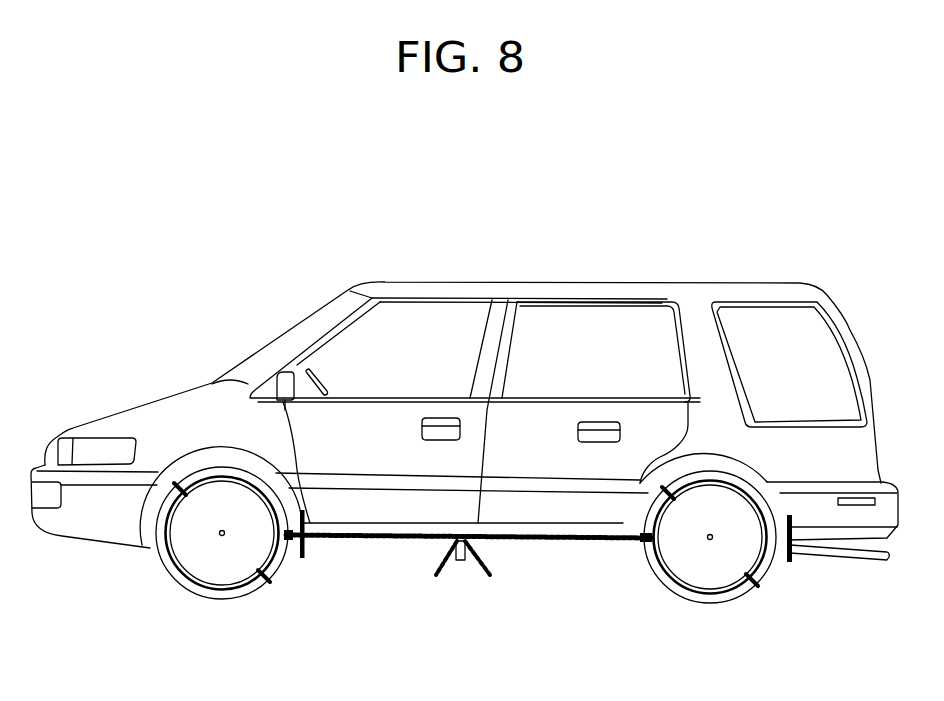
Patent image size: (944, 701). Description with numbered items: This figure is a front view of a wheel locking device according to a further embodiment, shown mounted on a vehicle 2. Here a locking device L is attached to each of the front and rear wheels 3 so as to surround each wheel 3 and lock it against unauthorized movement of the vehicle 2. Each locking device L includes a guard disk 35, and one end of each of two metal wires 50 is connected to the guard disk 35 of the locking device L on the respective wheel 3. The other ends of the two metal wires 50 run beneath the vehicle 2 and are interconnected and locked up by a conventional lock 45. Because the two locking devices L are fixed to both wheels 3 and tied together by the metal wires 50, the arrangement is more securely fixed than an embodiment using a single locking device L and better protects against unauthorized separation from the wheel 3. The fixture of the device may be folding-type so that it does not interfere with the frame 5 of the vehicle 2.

The vehicle 2 is at (467, 421).
The wheel 3 is at (176, 586).
The frame 5 is at (113, 523).
The guard disk 35 is at (234, 566).
The locking device L is at (198, 592).
The metal wire 50 is at (352, 540).
The lock 45 is at (460, 560).